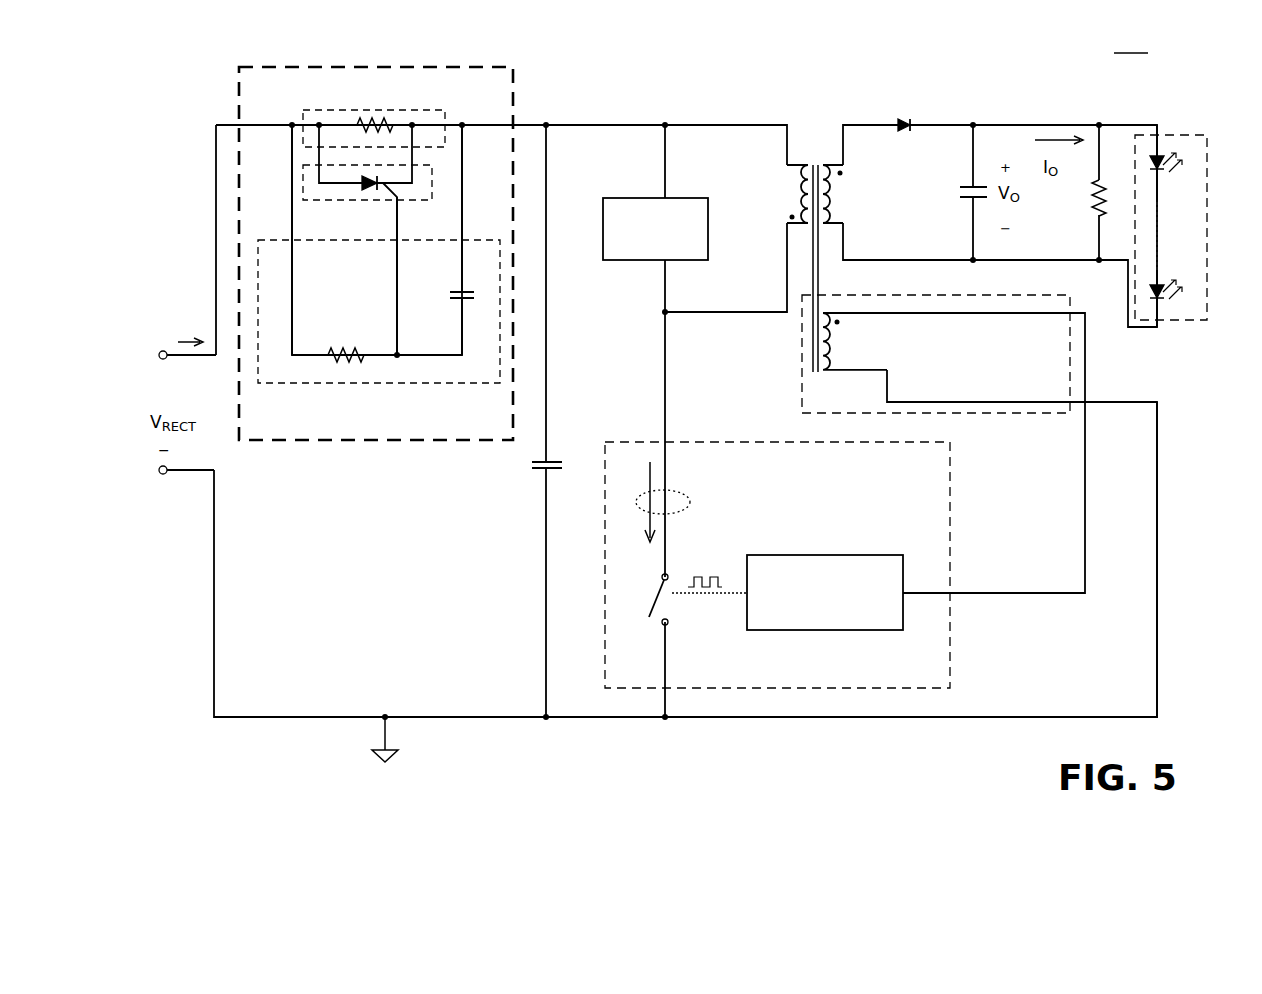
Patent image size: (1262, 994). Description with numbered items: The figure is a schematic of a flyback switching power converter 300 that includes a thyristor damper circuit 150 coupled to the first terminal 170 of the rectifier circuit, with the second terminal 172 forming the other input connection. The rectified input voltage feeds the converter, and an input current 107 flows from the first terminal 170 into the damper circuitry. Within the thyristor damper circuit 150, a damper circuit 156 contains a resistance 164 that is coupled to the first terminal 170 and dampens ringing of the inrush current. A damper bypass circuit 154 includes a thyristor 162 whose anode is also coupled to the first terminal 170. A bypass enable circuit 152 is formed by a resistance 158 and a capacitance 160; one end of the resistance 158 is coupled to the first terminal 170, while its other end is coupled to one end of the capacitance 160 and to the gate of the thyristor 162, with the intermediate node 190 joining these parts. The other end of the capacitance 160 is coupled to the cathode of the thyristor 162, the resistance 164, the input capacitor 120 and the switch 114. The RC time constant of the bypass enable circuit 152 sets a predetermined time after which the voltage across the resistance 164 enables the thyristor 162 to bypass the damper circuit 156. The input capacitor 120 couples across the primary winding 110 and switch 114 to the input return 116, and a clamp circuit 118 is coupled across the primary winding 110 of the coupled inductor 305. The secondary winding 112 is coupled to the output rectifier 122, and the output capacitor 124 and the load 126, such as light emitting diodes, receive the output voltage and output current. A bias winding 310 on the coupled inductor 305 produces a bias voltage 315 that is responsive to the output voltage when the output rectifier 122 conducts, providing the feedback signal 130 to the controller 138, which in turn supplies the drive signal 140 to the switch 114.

The switching power converter 300 is at (1131, 44).
The input current 107 is at (188, 332).
The primary winding 110 is at (799, 193).
The secondary winding 112 is at (848, 193).
The switch S1 114 is at (620, 603).
The input return 116 is at (398, 763).
The clamp circuit 118 is at (625, 198).
The input capacitor CF 120 is at (567, 463).
The rectifier D1 122 is at (903, 119).
The output capacitor C1 124 is at (943, 208).
The load 126 is at (1185, 134).
The feedback signal UFB 130 is at (1163, 464).
The controller 138 is at (840, 555).
The drive signal 140 is at (702, 577).
The thyristor damper circuit 150 is at (520, 104).
The bypass enable circuit 152 is at (455, 389).
The damper bypass circuit 154 is at (297, 183).
The damper circuit 156 is at (444, 112).
The resistance 158 is at (342, 366).
The capacitance 160 is at (478, 292).
The thyristor 162 is at (367, 200).
The resistance 164 is at (363, 113).
The first terminal 170 is at (161, 351).
The second terminal 172 is at (160, 476).
The intermediate node 190 is at (398, 283).
The coupled inductor 305 is at (822, 281).
The bias winding 310 is at (815, 378).
The voltage VB 315 is at (887, 341).